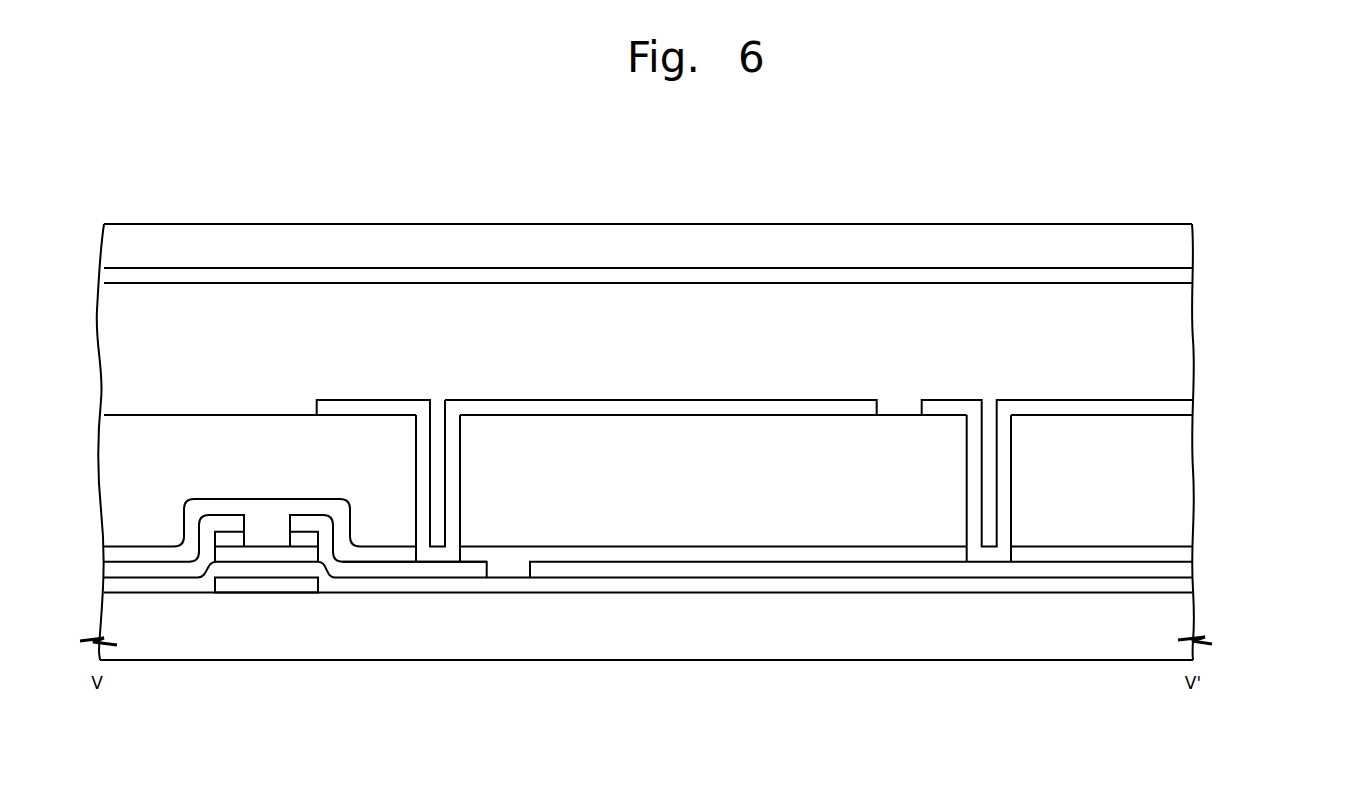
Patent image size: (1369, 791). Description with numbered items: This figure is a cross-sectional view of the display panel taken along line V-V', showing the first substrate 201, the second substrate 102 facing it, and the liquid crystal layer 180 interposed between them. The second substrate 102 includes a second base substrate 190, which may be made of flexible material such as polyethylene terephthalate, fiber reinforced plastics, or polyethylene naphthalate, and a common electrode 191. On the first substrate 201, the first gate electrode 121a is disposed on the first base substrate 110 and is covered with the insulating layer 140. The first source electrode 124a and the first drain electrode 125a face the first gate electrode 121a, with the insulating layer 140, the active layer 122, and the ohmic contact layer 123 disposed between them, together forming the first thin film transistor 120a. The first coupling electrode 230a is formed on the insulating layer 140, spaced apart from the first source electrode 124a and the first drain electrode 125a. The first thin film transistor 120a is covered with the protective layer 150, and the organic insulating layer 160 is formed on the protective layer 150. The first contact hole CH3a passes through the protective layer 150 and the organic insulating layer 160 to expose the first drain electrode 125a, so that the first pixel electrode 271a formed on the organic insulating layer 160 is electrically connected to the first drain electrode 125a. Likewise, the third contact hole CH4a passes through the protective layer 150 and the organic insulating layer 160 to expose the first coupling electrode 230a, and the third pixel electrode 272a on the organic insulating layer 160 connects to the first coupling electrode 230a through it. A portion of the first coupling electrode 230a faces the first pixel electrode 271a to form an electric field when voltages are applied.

The second base substrate 190 is at (1190, 245).
The common electrode 191 is at (1190, 277).
The second substrate 102 is at (721, 256).
The liquid crystal layer 180 is at (1190, 343).
The third pixel electrode 272a is at (1190, 408).
The first pixel electrode 271a is at (801, 408).
The first contact hole CH3a is at (460, 471).
The third contact hole CH4a is at (1012, 471).
The organic insulating layer 160 is at (1190, 470).
The protective layer 150 is at (1190, 552).
The first substrate 201 is at (712, 537).
The first coupling electrode 230a is at (1190, 569).
The insulating layer 140 is at (1190, 588).
The first base substrate 110 is at (677, 633).
The first source electrode 124a is at (163, 569).
The ohmic contact layer 123 is at (232, 540).
The first gate electrode 121a is at (265, 586).
The active layer 122 is at (301, 555).
The first drain electrode 125a is at (415, 636).
The first thin film transistor 120a is at (312, 644).